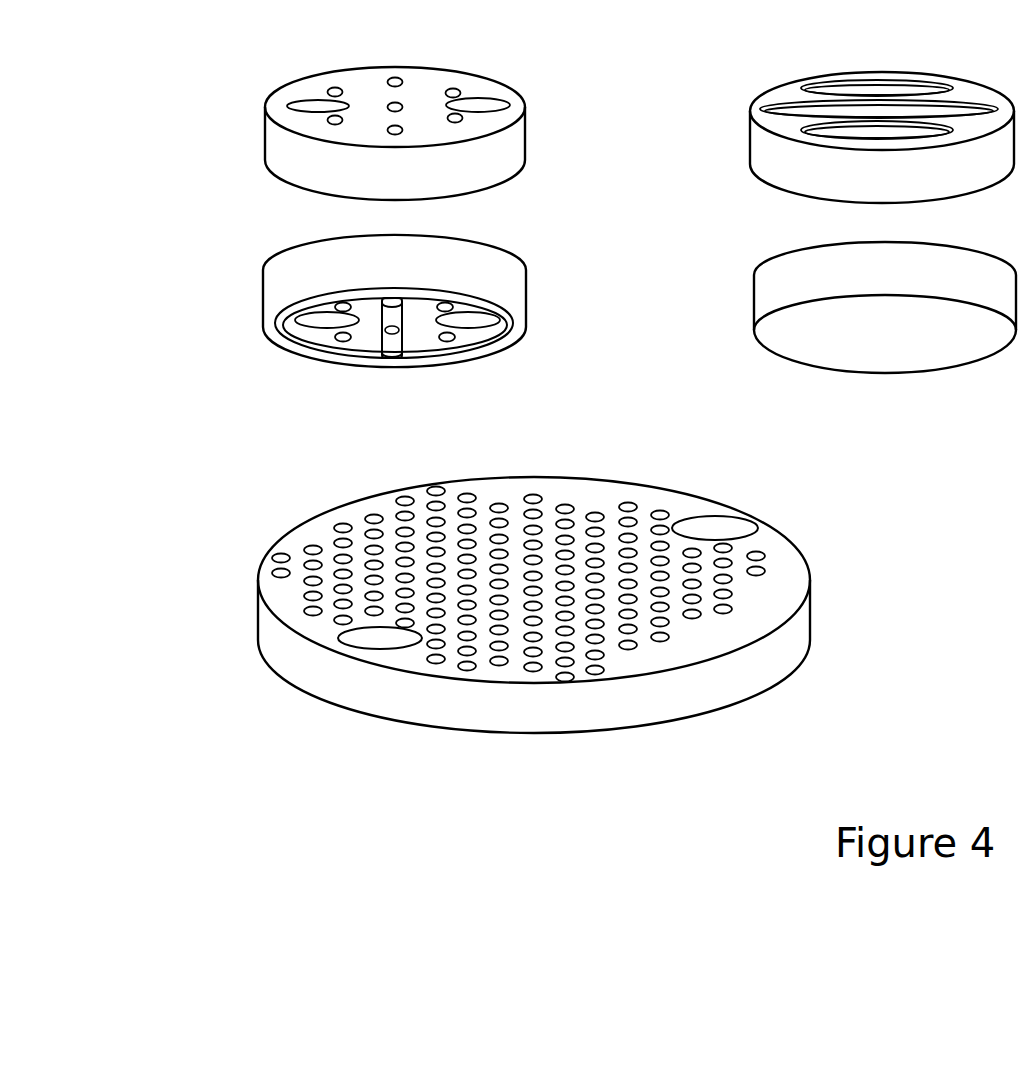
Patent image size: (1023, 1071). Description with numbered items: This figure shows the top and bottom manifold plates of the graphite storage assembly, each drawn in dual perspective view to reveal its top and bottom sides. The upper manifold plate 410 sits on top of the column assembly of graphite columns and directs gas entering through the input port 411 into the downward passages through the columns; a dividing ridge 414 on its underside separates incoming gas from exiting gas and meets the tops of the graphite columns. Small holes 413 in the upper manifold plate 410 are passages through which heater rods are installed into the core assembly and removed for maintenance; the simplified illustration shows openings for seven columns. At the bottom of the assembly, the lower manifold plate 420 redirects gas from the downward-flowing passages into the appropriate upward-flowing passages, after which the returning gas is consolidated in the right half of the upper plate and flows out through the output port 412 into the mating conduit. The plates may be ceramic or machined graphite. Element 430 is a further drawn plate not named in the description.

The upper manifold plate 410 is at (289, 276).
The gas input port 411 is at (314, 104).
The gas output port 412 is at (483, 105).
The small holes 413 is at (395, 105).
The dividing ridge 414 is at (393, 318).
The lower manifold plate 420 is at (779, 288).
The perforated base plate 430 is at (307, 658).